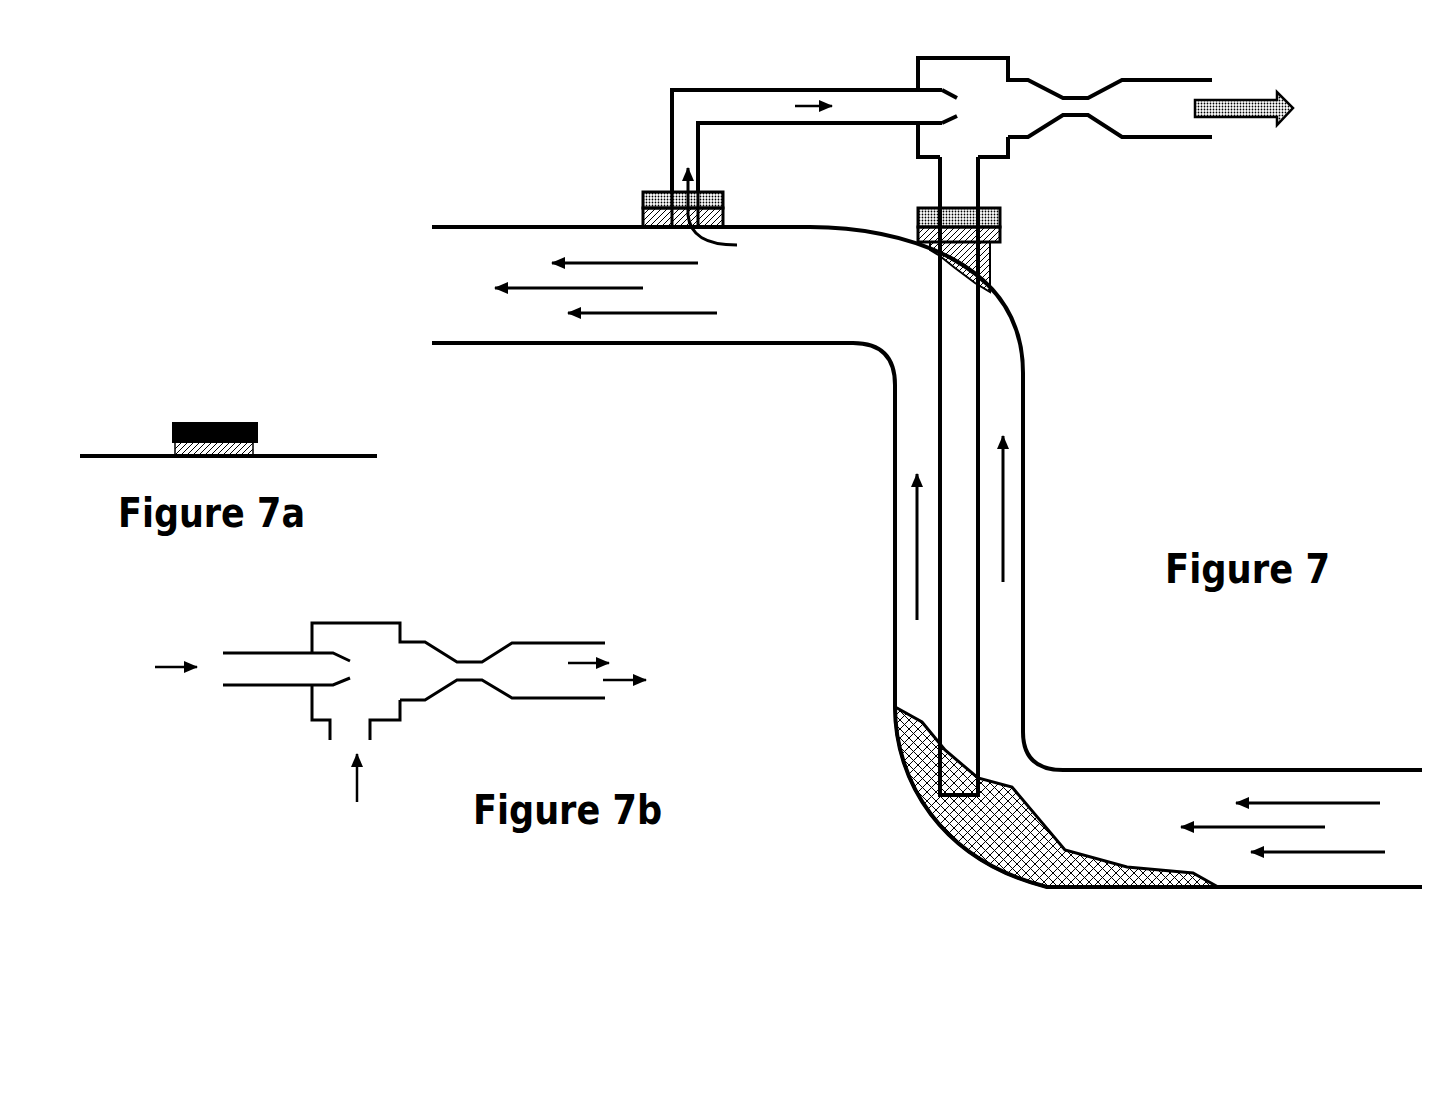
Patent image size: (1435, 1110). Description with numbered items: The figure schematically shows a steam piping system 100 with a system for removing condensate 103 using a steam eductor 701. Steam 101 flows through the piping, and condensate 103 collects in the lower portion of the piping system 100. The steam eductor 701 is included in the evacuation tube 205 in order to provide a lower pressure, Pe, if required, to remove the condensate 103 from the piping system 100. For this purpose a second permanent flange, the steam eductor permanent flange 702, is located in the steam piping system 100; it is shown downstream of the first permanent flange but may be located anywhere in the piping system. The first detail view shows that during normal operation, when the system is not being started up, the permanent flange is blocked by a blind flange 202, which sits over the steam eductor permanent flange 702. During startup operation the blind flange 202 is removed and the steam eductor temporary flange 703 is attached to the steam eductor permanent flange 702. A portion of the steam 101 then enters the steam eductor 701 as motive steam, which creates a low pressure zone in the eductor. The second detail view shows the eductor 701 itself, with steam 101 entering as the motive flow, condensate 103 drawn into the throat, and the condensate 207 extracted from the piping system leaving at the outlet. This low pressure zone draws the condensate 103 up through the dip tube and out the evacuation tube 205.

In FIG. 7, the steam piping system 100 is at (927, 615).
In FIG. 7, the steam 101 is at (927, 498).
In FIG. 7B, the steam 101 is at (213, 667).
In FIG. 7, the condensate 103 is at (1048, 797).
In FIG. 7B, the condensate 103 is at (362, 805).
In FIG. 7A, the blind flange 202 is at (191, 420).
In FIG. 7, the evacuation tube 205 is at (807, 139).
In FIG. 7, the condensate extracted from the piping system 207 is at (1289, 105).
In FIG. 7B, the condensate extracted from the piping system 207 is at (654, 675).
In FIG. 7, the steam eductor 701 is at (1105, 360).
In FIG. 7B, the steam eductor 701 is at (458, 670).
In FIG. 7, the steam eductor permanent flange 702 is at (638, 218).
In FIG. 7A, the steam eductor permanent flange 702 is at (269, 446).
In FIG. 7, the steam eductor temporary flange 703 is at (635, 192).